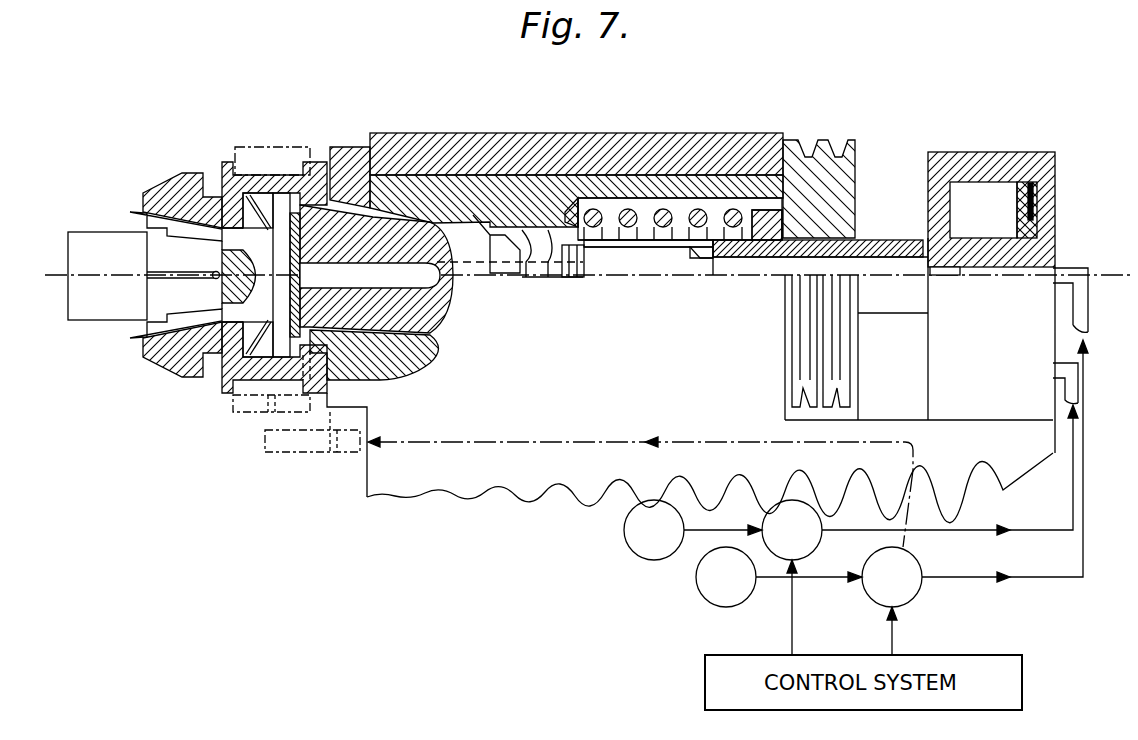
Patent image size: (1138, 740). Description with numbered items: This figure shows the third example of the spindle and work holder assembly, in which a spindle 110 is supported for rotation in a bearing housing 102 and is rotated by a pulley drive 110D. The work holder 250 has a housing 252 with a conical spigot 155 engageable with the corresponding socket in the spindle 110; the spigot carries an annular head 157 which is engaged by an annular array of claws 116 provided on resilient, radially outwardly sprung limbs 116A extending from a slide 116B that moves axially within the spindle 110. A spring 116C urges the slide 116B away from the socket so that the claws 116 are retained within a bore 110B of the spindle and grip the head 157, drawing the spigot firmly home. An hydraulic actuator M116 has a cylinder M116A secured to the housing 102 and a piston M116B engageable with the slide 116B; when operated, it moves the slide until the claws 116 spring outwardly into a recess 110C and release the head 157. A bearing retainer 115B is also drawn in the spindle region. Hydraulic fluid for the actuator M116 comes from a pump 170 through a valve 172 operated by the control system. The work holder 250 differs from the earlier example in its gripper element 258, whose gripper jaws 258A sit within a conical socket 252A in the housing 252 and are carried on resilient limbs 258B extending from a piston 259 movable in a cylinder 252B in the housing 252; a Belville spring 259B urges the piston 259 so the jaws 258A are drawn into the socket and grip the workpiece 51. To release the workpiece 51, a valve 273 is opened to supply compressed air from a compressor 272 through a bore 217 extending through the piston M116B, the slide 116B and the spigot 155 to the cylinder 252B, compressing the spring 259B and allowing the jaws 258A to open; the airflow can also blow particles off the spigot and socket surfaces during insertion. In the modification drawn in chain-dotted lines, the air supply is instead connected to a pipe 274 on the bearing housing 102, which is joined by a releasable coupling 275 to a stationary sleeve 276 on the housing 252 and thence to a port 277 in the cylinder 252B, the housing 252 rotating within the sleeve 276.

The workpiece 51 is at (74, 320).
The bearing housing 102 is at (727, 124).
The spindle 110 is at (443, 193).
The bore 110B is at (520, 228).
The recess 110C is at (497, 247).
The pulley drive 110D is at (824, 150).
The bearing retainer 115B is at (535, 228).
The claws 116 is at (604, 258).
The resilient limbs 116A is at (688, 250).
The slide 116B is at (830, 258).
The spring 116C is at (624, 212).
The conical spigot 155 is at (380, 200).
The annular head 157 is at (636, 250).
The pump 170 is at (642, 548).
The valve 172 is at (807, 510).
The bore 217 is at (432, 282).
The work holder 250 is at (148, 178).
The housing 252 is at (165, 178).
The conical socket 252A is at (183, 227).
The cylinder 252B is at (270, 182).
The gripper element 258 is at (155, 280).
The gripper jaws 258A is at (130, 215).
The resilient limbs 258B is at (140, 337).
The piston 259 is at (284, 200).
The Belville spring 259B is at (172, 368).
The compressor 272 is at (712, 595).
The valve 273 is at (914, 568).
The pipe 274 is at (350, 458).
The releasable coupling 275 is at (325, 452).
The sleeve 276 is at (243, 403).
The port 277 is at (367, 378).
The hydraulic actuator M116 is at (1023, 278).
The cylinder M116A is at (1010, 160).
The piston M116B is at (1013, 218).